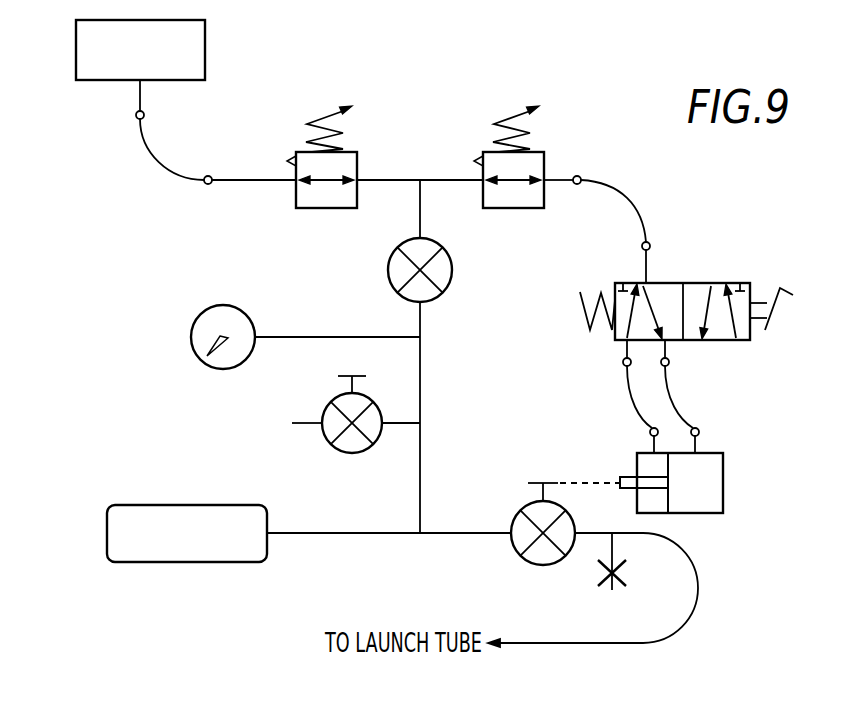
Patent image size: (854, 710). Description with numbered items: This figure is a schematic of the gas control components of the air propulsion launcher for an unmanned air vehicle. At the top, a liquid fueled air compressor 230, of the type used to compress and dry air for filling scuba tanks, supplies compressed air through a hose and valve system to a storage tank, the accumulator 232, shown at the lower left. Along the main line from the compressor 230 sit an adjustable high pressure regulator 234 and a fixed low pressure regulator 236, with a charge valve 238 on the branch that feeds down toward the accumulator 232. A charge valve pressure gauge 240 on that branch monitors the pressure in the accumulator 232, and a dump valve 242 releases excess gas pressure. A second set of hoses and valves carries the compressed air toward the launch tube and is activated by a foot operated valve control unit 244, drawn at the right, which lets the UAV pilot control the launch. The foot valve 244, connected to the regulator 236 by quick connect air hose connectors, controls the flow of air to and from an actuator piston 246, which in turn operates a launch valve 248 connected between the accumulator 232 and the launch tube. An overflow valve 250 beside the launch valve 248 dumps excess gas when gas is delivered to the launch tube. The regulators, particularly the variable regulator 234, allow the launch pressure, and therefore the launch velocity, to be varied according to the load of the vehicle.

The air compressor 230 is at (76, 37).
The accumulator 232 is at (128, 505).
The adjustable high pressure regulator 234 is at (306, 208).
The fixed low pressure regulator 236 is at (514, 208).
The charge valve 238 is at (440, 298).
The charge valve pressure gauge 240 is at (204, 315).
The dump valve 242 is at (347, 457).
The foot operated valve control unit 244 is at (732, 341).
The actuator piston 246 is at (723, 468).
The launch valve 248 is at (531, 564).
The overflow valve 250 is at (600, 585).